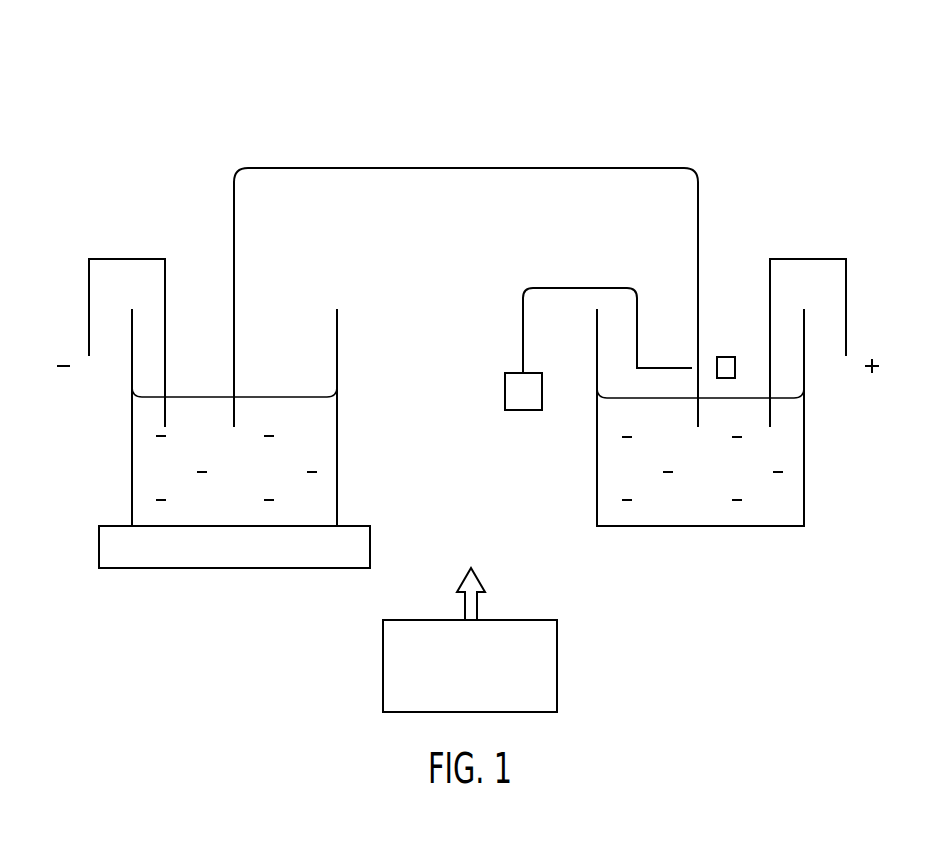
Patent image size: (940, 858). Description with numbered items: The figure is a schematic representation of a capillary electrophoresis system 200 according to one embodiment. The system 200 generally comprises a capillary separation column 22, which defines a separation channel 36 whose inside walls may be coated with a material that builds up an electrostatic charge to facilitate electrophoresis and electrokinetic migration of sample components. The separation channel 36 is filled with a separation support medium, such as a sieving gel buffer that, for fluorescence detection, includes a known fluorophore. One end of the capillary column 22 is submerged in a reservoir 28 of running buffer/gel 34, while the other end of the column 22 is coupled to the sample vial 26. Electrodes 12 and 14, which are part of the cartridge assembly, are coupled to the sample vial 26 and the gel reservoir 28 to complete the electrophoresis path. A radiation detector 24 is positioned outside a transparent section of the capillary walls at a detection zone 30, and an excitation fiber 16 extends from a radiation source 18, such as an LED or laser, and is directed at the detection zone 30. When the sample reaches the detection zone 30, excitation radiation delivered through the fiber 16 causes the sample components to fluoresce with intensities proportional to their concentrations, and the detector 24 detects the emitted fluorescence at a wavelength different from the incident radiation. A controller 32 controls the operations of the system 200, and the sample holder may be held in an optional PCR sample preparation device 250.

The capillary electrophoresis system 200 is at (563, 135).
The electrode 12 is at (86, 273).
The electrode 14 is at (847, 289).
The excitation fiber 16 is at (522, 325).
The radiation source 18 is at (524, 412).
The capillary separation column 22 is at (333, 172).
The radiation detector 24 is at (726, 357).
The sample vial 26 is at (337, 438).
The reservoir 28 is at (804, 490).
The detection zone 30 is at (693, 358).
The controller 32 is at (458, 681).
The running buffer/gel 34 is at (246, 509).
The separation channel 36 is at (373, 167).
The PCR sample preparation device 250 is at (217, 562).